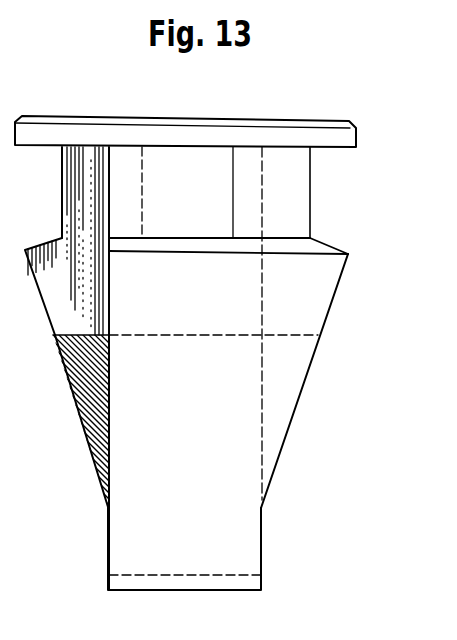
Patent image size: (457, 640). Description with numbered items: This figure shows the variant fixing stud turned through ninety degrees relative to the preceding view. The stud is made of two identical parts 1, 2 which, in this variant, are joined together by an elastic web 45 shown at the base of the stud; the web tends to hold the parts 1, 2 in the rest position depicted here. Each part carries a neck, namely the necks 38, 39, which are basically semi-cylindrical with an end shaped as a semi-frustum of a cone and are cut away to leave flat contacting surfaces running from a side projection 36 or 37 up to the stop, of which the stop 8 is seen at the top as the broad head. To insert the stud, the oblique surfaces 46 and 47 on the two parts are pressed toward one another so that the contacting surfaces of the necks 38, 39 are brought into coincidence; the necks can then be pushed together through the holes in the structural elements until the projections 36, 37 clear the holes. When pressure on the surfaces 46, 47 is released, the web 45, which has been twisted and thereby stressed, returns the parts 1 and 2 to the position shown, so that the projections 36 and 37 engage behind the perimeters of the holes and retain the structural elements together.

The stop 8 is at (330, 128).
The neck 38 is at (87, 182).
The side projection 36 is at (52, 238).
The side projection 37 is at (202, 248).
The neck 39 is at (280, 193).
The oblique surface 46 is at (48, 323).
The oblique surface 47 is at (328, 315).
The elastic web 45 is at (172, 582).
The part 1 is at (62, 428).
The part 2 is at (303, 430).